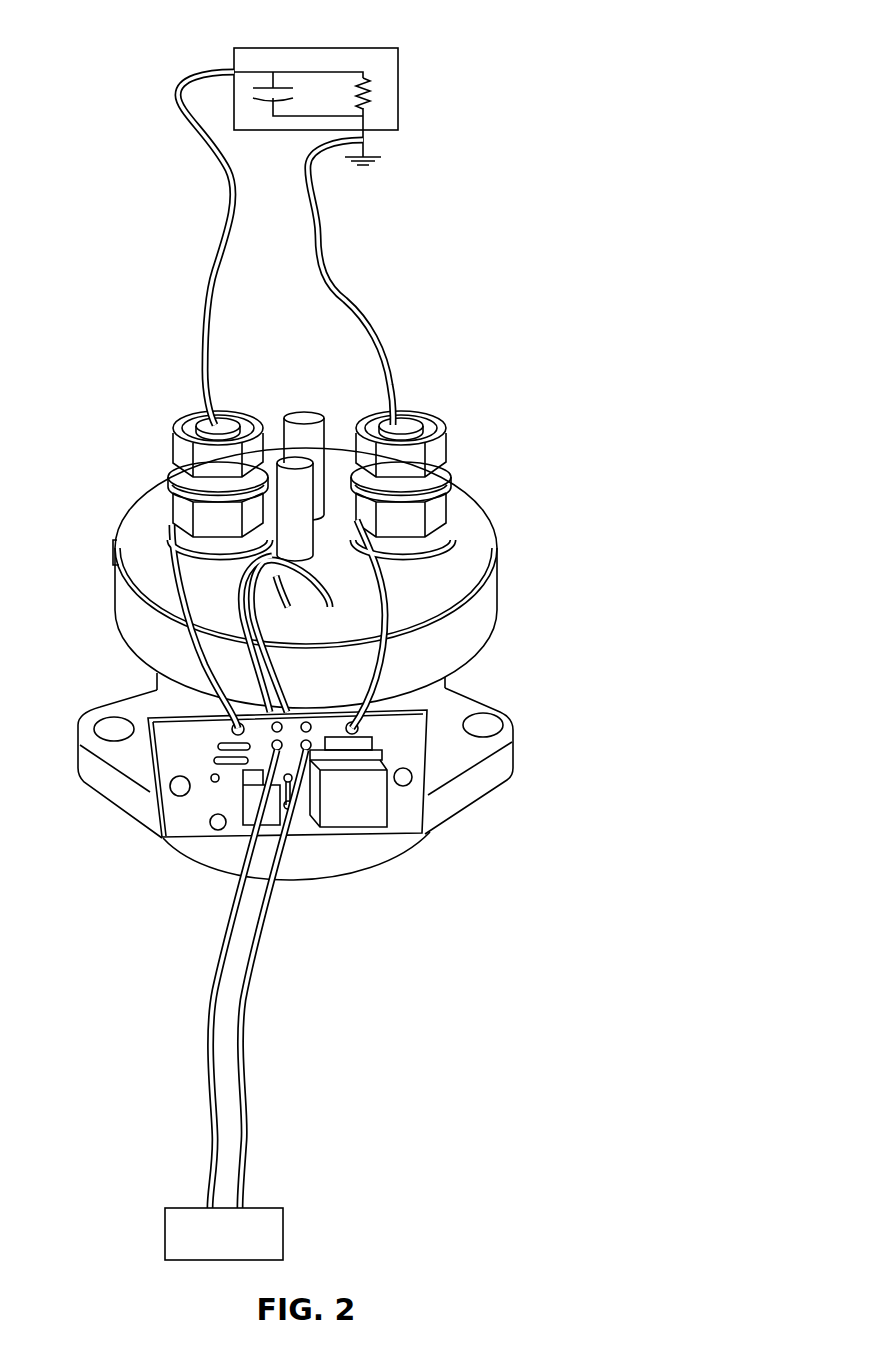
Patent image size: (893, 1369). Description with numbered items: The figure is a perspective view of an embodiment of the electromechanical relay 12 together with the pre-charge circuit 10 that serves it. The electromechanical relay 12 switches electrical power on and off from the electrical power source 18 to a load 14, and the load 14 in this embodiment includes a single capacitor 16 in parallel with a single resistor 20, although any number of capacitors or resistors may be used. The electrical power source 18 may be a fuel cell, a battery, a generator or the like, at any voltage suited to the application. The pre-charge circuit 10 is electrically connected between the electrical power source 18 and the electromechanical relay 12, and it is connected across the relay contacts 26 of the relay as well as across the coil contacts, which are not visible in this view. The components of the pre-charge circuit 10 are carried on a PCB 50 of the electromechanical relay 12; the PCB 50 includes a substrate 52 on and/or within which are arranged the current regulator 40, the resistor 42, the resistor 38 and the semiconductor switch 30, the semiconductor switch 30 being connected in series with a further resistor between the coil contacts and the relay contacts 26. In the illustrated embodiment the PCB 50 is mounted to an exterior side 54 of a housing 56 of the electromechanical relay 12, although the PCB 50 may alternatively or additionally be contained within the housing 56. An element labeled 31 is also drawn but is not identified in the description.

The pre-charge circuit 10 is at (313, 640).
The electromechanical relay 12 is at (466, 583).
The load 14 is at (352, 82).
The capacitor 16 is at (286, 90).
The electrical power source 18 is at (224, 1234).
The resistor 20 is at (370, 82).
The relay contacts 26 is at (178, 512).
The semiconductor switch 30 is at (350, 832).
The electronic component 31 is at (243, 820).
The resistor 38 is at (290, 812).
The current regulator 40 is at (232, 747).
The resistor 42 is at (213, 762).
The PCB 50 is at (233, 817).
The substrate 52 is at (410, 818).
The exterior side 54 is at (479, 623).
The housing 56 is at (465, 640).